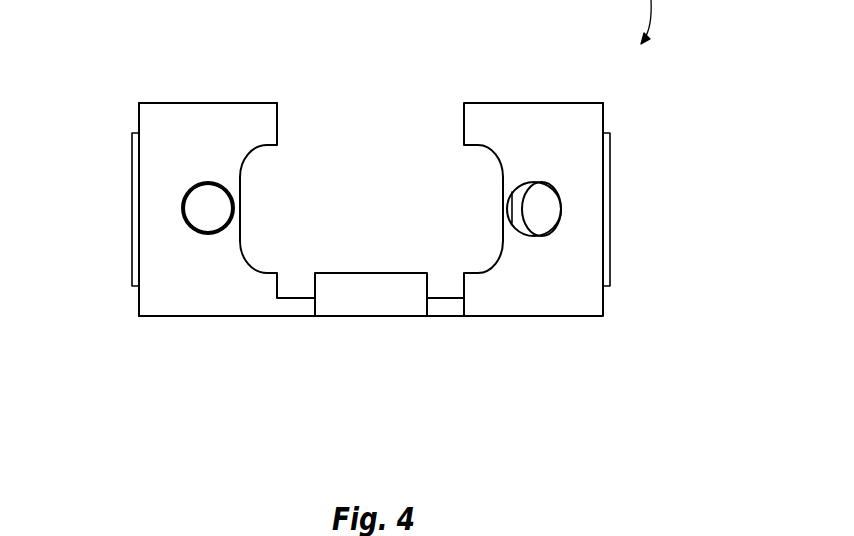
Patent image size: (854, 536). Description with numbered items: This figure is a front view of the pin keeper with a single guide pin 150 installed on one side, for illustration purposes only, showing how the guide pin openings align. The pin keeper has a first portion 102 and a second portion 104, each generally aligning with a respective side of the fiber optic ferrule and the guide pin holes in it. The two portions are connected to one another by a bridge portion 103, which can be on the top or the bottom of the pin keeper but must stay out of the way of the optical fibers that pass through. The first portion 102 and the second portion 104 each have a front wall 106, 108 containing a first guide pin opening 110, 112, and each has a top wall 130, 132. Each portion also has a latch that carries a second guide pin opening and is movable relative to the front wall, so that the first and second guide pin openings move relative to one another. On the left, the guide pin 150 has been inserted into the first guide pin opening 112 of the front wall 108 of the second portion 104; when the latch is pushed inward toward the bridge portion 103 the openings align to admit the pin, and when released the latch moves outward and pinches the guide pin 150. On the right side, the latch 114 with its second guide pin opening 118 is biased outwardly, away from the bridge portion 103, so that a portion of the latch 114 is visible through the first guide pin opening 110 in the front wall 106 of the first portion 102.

The first portion 102 is at (597, 117).
The bridge portion 103 is at (448, 307).
The second portion 104 is at (138, 123).
The front wall 106 is at (592, 300).
The front wall 108 is at (178, 102).
The first guide pin opening 110 is at (554, 228).
The first guide pin opening 112 is at (200, 236).
The latch 114 is at (518, 218).
The second guide pin opening 118 is at (548, 202).
The top wall 130 is at (547, 102).
The top wall 132 is at (253, 102).
The guide pin 150 is at (200, 210).